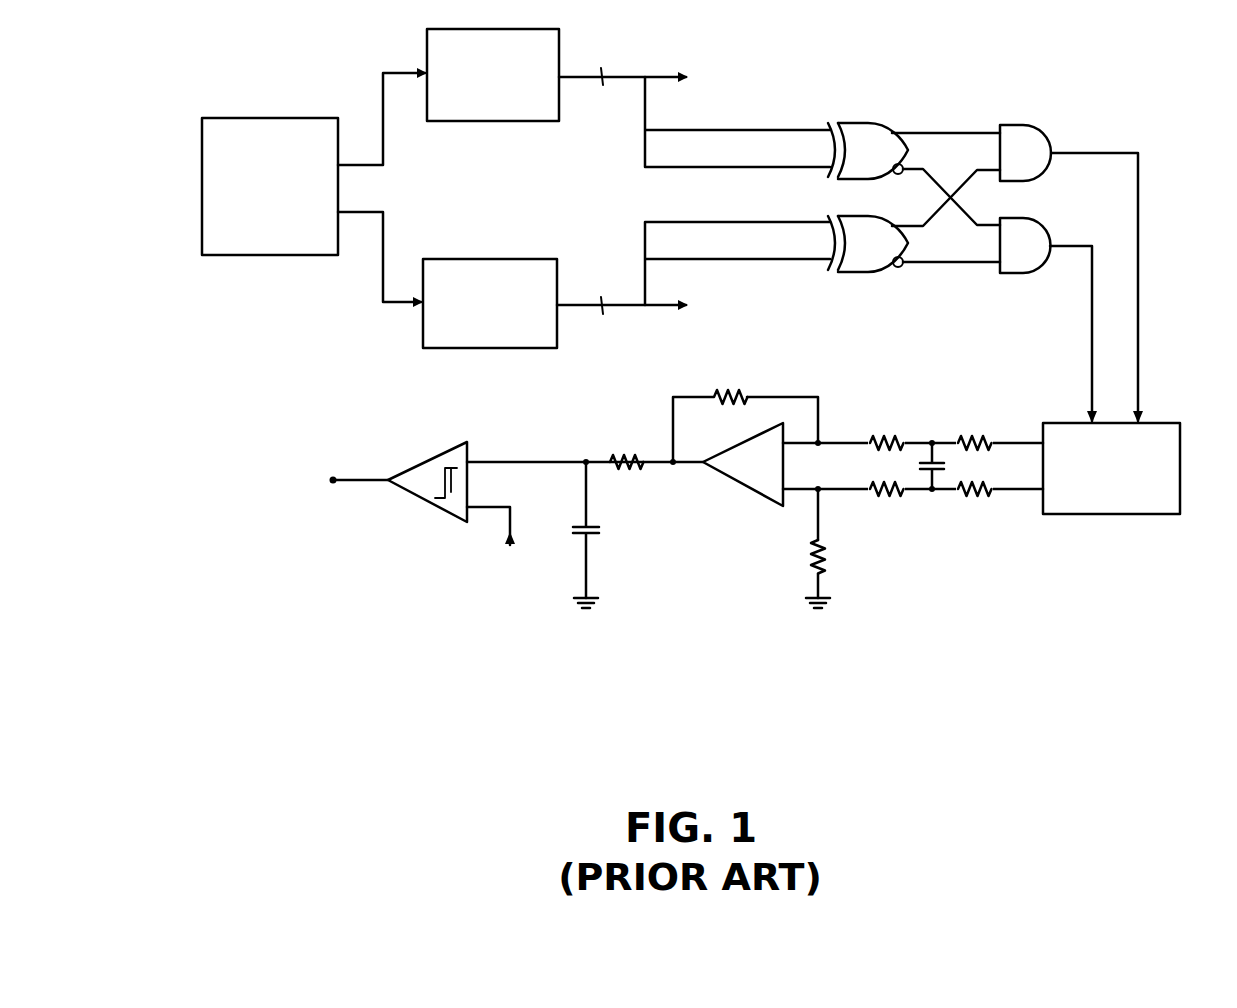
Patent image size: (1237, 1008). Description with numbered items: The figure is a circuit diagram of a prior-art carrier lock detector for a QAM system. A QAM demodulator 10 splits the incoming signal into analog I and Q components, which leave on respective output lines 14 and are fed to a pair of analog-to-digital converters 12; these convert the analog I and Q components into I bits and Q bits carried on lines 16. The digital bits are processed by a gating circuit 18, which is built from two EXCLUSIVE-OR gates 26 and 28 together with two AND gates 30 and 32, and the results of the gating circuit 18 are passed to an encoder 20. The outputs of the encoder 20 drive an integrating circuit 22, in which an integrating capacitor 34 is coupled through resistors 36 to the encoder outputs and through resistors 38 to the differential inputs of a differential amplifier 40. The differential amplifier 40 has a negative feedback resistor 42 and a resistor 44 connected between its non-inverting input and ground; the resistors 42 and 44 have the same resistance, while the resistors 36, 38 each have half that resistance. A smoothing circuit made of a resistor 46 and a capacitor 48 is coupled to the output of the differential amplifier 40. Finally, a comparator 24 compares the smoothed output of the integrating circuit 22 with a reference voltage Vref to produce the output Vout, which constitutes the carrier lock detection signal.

The QAM demodulator 10 is at (302, 249).
The analog-to-digital converters 12 is at (535, 113).
The output lines 14 is at (383, 128).
The lines 16 is at (600, 100).
The gating circuit 18 is at (985, 258).
The encoder 20 is at (1118, 505).
The integrating circuit 22 is at (662, 482).
The comparator 24 is at (430, 468).
The EXCLUSIVE-OR gate 26 is at (865, 128).
The EXCLUSIVE-OR gate 28 is at (865, 220).
The AND gate 30 is at (1027, 170).
The AND gate 32 is at (1027, 263).
The integrating capacitor 34 is at (940, 470).
The resistors 36 is at (975, 480).
The resistors 38 is at (887, 478).
The differential amplifier 40 is at (740, 475).
The negative feedback resistor 42 is at (730, 410).
The resistor 44 is at (826, 555).
The resistor 46 is at (630, 475).
The capacitor 48 is at (592, 535).